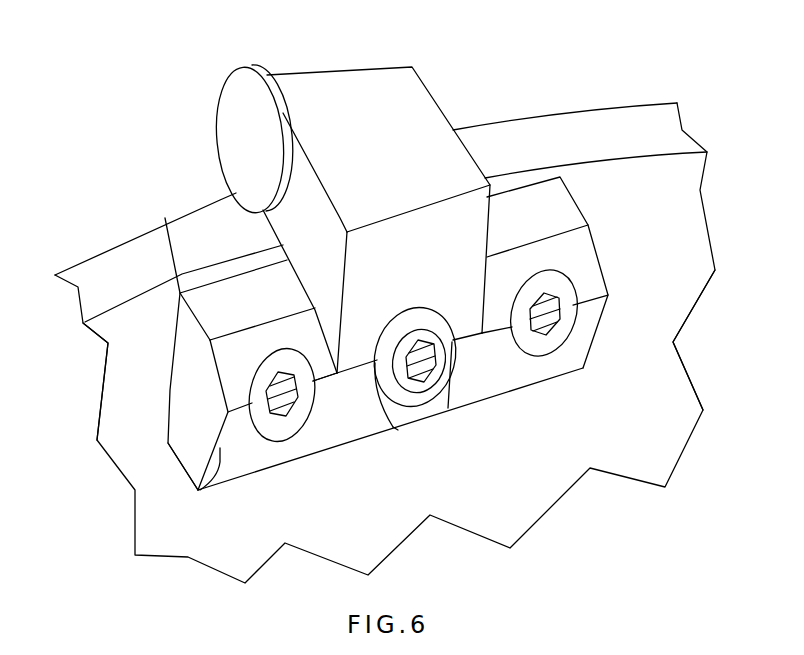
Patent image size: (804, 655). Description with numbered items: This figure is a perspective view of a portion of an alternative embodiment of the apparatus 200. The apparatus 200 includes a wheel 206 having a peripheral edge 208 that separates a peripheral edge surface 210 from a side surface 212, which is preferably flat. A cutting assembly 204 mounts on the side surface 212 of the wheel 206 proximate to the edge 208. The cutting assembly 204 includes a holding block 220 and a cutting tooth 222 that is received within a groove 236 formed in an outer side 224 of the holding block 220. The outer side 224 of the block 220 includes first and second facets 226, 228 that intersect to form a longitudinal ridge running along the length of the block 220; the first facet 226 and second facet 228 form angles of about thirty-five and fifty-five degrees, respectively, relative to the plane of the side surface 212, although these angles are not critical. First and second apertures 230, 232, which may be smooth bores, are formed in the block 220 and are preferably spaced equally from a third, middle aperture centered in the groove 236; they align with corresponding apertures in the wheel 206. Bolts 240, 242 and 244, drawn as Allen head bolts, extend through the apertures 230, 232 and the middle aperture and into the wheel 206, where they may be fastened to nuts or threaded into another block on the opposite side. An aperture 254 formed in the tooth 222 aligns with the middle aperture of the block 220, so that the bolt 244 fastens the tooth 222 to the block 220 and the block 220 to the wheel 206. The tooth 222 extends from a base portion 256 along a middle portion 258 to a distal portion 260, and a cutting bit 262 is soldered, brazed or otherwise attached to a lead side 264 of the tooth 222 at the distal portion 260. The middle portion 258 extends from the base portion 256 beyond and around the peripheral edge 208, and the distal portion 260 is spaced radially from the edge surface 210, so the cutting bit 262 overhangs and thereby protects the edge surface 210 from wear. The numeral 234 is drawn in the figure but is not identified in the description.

The apparatus 200 is at (132, 134).
The cutting assembly 204 is at (434, 79).
The wheel 206 is at (82, 246).
The peripheral edge 208 is at (170, 218).
The peripheral edge surface 210 is at (138, 287).
The side surface 212 is at (164, 395).
The holding block 220 is at (593, 335).
The cutting tooth 222 is at (443, 110).
The outer side 224 is at (222, 480).
The first facet 226 is at (269, 368).
The second facet 228 is at (198, 489).
The first aperture 230 is at (283, 442).
The second aperture 232 is at (528, 358).
The collar 234 is at (418, 317).
The groove 236 is at (317, 433).
The bolt 240 is at (247, 447).
The bolt 242 is at (560, 347).
The bolt 244 is at (387, 333).
The aperture 254 is at (395, 424).
The base portion 256 is at (358, 422).
The middle portion 258 is at (473, 242).
The distal portion 260 is at (393, 157).
The cutting bit 262 is at (245, 65).
The lead side 264 is at (343, 248).